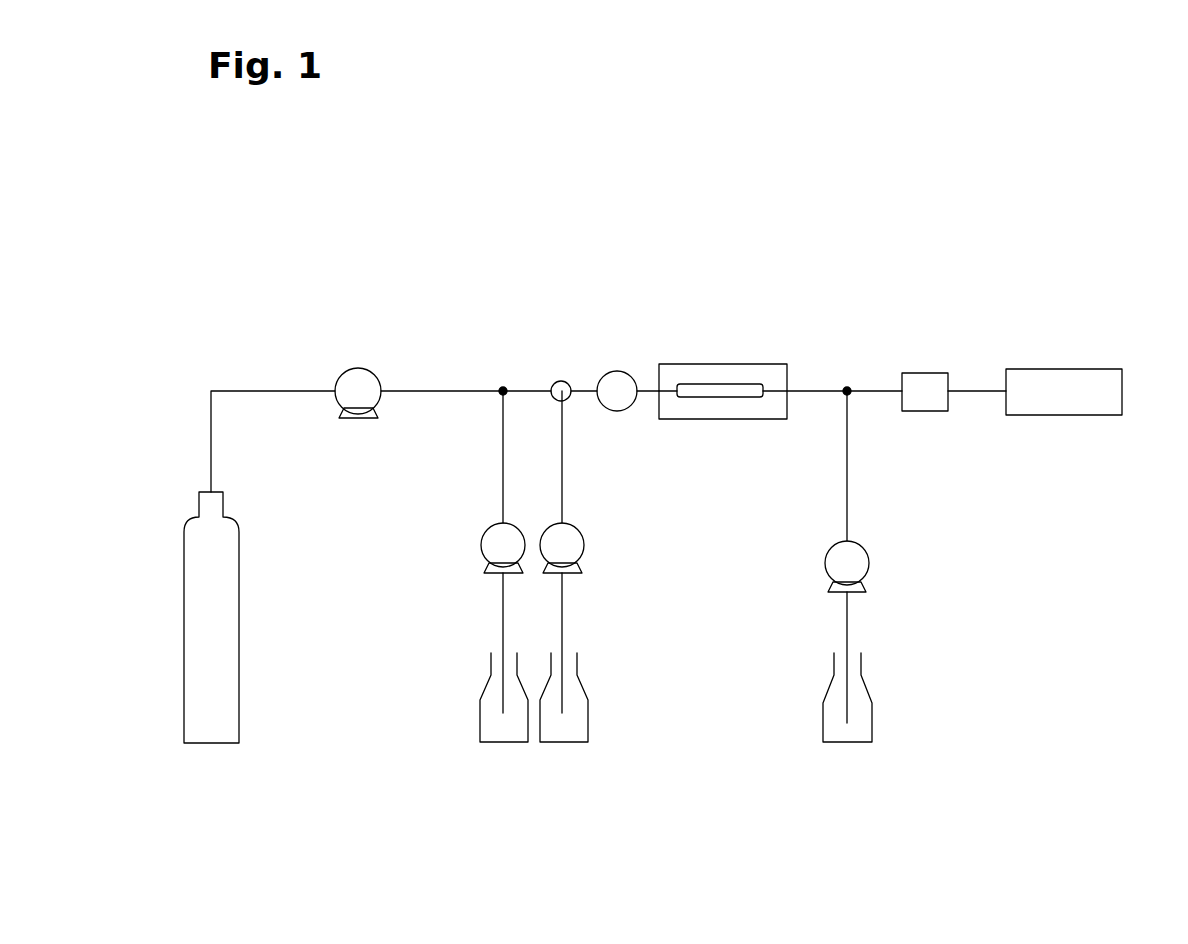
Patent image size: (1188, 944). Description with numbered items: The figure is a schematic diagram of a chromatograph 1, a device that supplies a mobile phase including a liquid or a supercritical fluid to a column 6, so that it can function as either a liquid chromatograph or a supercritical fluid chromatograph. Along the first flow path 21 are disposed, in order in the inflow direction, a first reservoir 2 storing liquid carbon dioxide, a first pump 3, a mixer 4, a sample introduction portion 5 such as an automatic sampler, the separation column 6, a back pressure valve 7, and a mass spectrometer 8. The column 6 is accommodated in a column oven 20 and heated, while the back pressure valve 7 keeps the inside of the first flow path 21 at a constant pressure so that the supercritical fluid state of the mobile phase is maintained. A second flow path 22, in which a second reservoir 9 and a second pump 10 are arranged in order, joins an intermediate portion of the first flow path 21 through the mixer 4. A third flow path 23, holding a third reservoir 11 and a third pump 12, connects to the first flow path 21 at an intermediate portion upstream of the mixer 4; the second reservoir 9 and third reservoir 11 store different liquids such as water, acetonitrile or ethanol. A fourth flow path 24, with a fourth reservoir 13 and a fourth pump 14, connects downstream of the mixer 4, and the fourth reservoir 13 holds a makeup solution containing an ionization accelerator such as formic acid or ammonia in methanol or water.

The chromatograph 1 is at (883, 273).
The first reservoir 2 is at (239, 574).
The first pump 3 is at (355, 368).
The mixer 4 is at (563, 381).
The sample introduction portion 5 is at (618, 371).
The column 6 is at (740, 384).
The back pressure valve 7 is at (921, 373).
The mass spectrometer 8 is at (1050, 369).
The second reservoir 9 is at (588, 715).
The second pump 10 is at (584, 545).
The third reservoir 11 is at (480, 710).
The third pump 12 is at (481, 545).
The fourth reservoir 13 is at (872, 705).
The fourth pump 14 is at (870, 557).
The column oven 20 is at (683, 364).
The first flow path 21 is at (450, 390).
The second flow path 22 is at (562, 615).
The third flow path 23 is at (503, 615).
The fourth flow path 24 is at (848, 464).